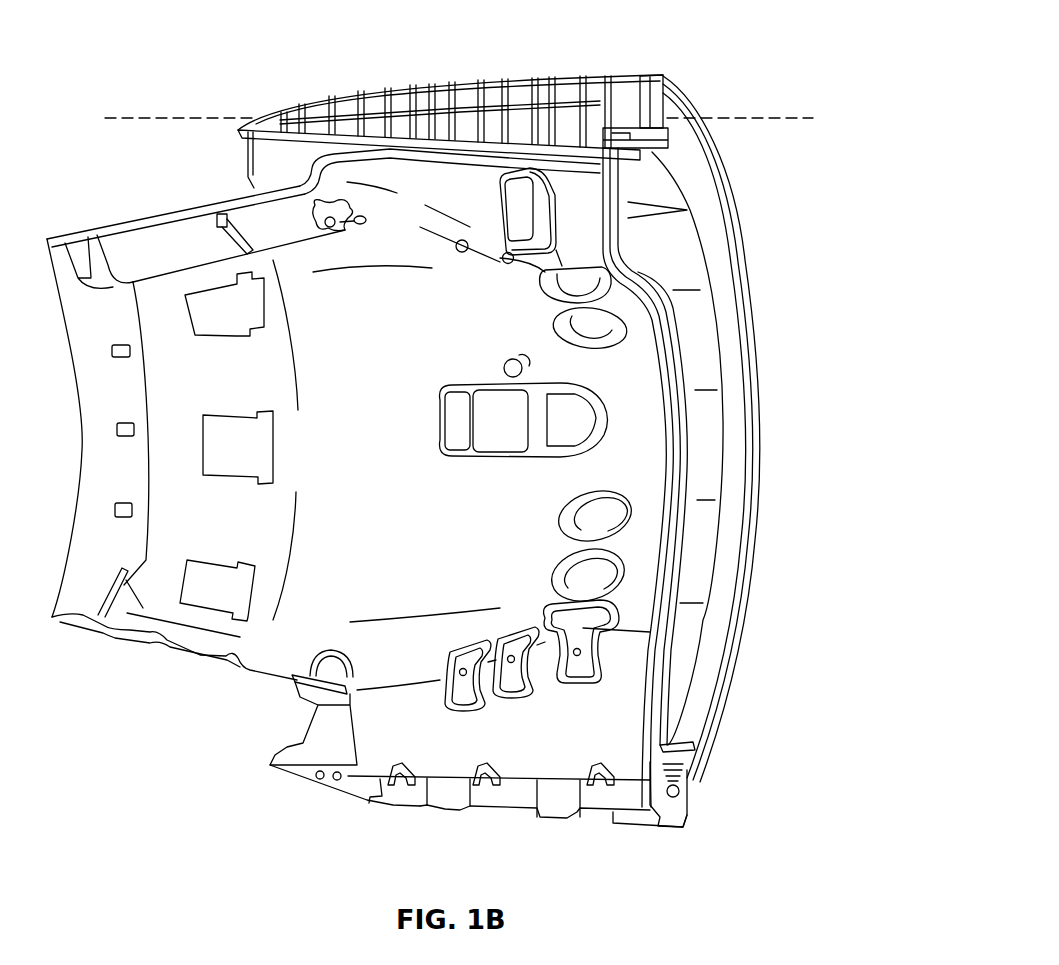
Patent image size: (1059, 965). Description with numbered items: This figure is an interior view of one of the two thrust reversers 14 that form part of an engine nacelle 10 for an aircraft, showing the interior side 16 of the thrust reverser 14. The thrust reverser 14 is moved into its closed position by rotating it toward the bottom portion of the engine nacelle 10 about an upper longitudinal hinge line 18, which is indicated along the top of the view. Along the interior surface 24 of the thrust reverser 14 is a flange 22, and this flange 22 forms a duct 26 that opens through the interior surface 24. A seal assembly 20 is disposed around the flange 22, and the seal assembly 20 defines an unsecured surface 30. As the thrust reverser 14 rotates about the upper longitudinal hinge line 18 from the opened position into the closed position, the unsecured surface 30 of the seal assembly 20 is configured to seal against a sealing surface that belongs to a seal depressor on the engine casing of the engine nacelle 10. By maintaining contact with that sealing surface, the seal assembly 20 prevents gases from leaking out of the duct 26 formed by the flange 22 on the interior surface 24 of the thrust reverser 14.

The engine nacelle 10 is at (810, 39).
The thrust reverser 14 is at (760, 433).
The interior side 16 is at (628, 437).
The upper longitudinal hinge line 18 is at (780, 117).
The seal assembly 20 is at (497, 194).
The flange 22 is at (505, 193).
The interior surface 24 is at (389, 362).
The duct 26 is at (513, 207).
The unsecured surface 30 is at (502, 263).